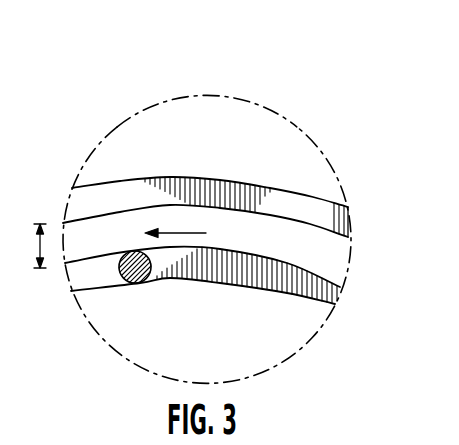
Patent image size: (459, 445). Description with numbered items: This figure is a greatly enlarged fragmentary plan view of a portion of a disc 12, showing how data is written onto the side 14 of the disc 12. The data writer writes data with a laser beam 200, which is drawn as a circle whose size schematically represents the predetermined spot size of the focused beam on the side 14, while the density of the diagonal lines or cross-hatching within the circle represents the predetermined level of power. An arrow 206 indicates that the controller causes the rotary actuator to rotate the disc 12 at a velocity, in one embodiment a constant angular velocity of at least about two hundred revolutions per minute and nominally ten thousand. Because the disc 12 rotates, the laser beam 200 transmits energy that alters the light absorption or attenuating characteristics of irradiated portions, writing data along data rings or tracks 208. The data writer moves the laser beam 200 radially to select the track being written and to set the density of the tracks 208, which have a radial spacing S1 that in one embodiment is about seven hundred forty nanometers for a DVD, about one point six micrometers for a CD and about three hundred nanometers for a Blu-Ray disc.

The disc 12 is at (327, 135).
The side of disc 14 is at (200, 113).
The laser beam 200 is at (119, 265).
The arrow 206 is at (185, 232).
The data tracks 208 is at (352, 218).
The radial spacing S1 is at (25, 246).